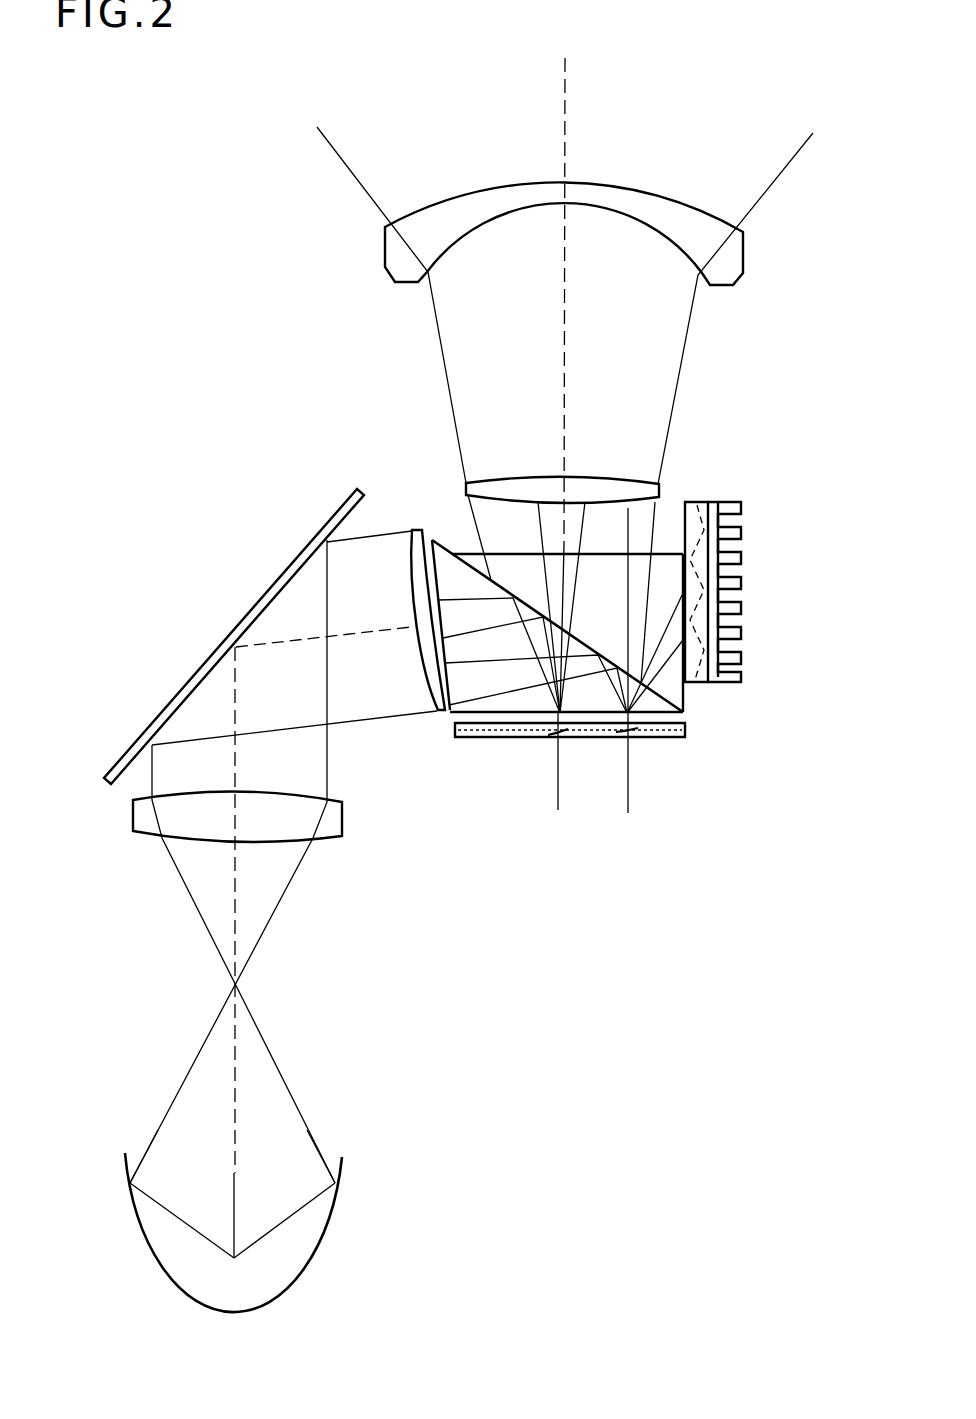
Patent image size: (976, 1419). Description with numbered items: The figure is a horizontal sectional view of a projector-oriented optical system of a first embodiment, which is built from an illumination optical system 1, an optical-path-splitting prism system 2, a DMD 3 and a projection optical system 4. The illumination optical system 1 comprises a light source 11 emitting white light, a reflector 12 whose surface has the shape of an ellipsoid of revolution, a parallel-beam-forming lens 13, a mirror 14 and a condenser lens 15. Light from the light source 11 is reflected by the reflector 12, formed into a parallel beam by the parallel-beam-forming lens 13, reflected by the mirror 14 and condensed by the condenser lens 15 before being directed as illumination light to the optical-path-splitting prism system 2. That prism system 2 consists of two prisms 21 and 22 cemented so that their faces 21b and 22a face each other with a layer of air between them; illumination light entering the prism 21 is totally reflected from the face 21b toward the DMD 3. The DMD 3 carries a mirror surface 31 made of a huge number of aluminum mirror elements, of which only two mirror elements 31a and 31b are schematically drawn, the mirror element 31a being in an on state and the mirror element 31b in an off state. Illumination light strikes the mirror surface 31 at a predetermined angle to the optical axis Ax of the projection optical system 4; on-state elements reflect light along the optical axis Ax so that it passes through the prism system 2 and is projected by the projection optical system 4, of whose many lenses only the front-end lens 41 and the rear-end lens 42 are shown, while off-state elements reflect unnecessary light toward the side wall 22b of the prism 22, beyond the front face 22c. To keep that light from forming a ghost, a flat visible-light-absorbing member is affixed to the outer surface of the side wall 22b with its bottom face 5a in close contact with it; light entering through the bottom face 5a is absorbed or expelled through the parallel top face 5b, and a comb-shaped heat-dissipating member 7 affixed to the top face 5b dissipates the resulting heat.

The optical axis Ax is at (570, 84).
The illumination optical system 1 is at (46, 1311).
The light source 11 is at (233, 1258).
The reflector 12 is at (133, 1208).
The parallel-beam-forming lens 13 is at (132, 816).
The mirror 14 is at (137, 748).
The condenser lens 15 is at (412, 525).
The optical-path-splitting prism system 2 is at (788, 658).
The prism 21 is at (685, 708).
The face 21b is at (685, 731).
The prism 22 is at (518, 547).
The face 22a is at (462, 554).
The side wall 22b is at (677, 554).
The front face 22c is at (672, 554).
The DMD 3 is at (523, 776).
The mirror surface 31 is at (450, 729).
The mirror element 31a is at (555, 737).
The mirror element 31b is at (620, 737).
The projection optical system 4 is at (288, 243).
The front-end lens 41 is at (385, 253).
The rear-end lens 42 is at (463, 487).
The bottom face 5a is at (680, 554).
The top face 5b is at (710, 503).
The heat-dissipating member 7 is at (741, 592).